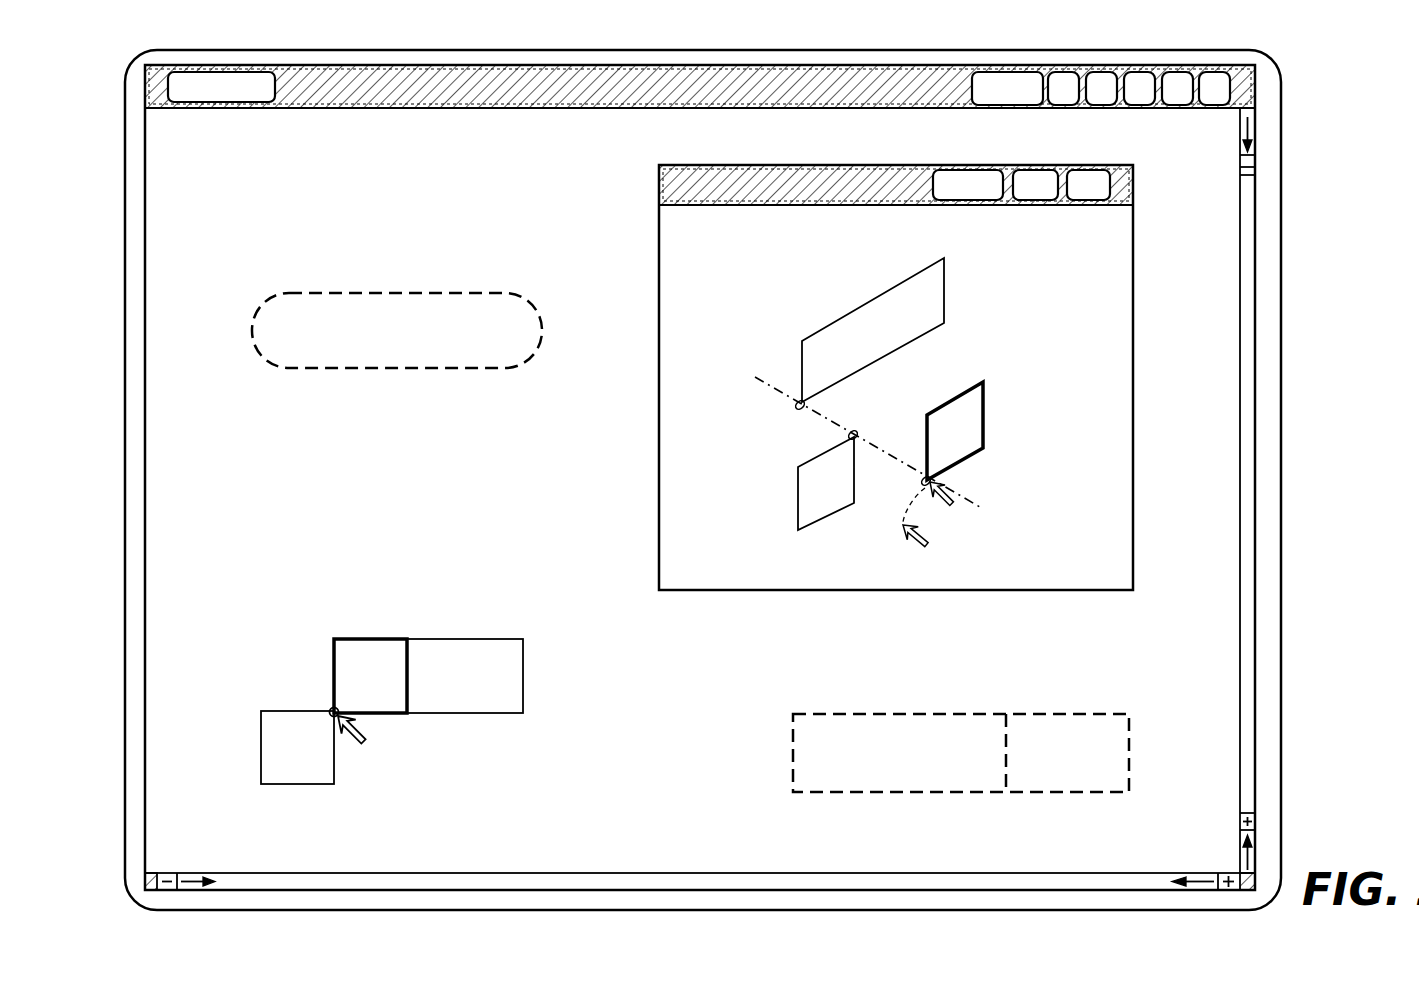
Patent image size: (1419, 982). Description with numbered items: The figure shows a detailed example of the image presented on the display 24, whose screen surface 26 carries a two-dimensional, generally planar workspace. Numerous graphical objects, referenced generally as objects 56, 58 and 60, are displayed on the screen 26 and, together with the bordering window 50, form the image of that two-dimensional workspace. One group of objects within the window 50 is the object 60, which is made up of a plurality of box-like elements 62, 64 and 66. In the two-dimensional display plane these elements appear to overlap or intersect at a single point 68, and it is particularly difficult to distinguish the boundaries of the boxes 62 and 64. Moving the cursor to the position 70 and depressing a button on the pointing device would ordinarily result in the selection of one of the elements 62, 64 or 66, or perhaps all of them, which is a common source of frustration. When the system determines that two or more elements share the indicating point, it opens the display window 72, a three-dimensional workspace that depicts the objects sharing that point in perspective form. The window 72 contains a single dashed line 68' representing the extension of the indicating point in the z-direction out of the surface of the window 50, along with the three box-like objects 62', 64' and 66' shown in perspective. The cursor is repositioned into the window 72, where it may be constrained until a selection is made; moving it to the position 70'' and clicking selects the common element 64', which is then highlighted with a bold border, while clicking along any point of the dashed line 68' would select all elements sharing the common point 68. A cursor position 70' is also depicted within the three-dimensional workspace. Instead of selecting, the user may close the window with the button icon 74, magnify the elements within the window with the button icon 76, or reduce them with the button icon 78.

The display 24 is at (1281, 650).
The screen surface 26 is at (1266, 525).
The bordering window 50 is at (1256, 385).
The graphical object 56 is at (980, 801).
The graphical object 58 is at (405, 387).
The object 60 is at (387, 695).
The box-like element 62 is at (469, 653).
The box-like element 64 is at (386, 653).
The box-like element 66 is at (310, 768).
The point 68 is at (291, 691).
The cursor position 70 is at (386, 745).
The display window 72 is at (913, 379).
The close button icon 74 is at (960, 170).
The magnify button icon 76 is at (1033, 170).
The reduce button icon 78 is at (1093, 170).
The box-like graphical object 62' is at (861, 334).
The box-like graphical object 64' is at (983, 416).
The box-like graphical object 66' is at (803, 478).
The dashed line 68' is at (807, 435).
The cursor position 70' is at (955, 530).
The cursor position 70'' is at (995, 488).